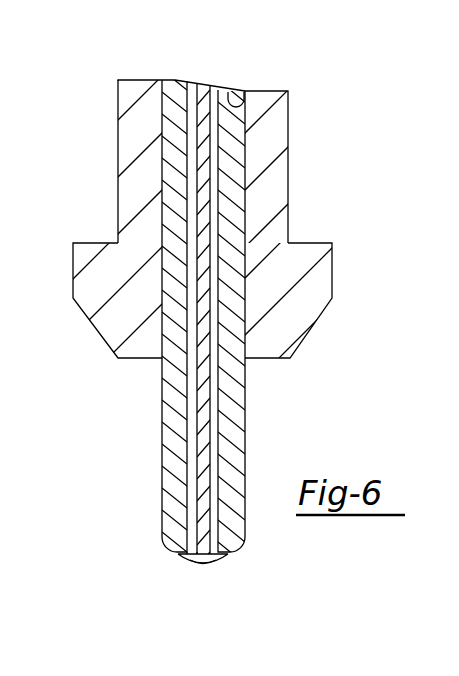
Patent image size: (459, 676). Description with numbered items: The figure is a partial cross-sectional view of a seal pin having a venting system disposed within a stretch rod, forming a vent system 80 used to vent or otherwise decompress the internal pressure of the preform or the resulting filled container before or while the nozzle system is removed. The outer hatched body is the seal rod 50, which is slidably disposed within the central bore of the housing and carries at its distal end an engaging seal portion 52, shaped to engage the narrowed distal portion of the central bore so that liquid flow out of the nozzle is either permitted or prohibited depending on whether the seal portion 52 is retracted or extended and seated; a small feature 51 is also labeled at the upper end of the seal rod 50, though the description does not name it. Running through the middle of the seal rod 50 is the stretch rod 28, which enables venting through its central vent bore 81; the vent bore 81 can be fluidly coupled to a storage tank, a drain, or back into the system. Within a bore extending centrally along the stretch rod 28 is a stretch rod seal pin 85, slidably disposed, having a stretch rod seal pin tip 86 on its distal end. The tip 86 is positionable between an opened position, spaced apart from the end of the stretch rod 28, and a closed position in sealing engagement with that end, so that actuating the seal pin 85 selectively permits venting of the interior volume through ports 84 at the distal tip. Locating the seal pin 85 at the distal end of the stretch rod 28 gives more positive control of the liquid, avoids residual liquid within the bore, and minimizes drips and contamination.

The seal rod 50 is at (118, 103).
The seal pocket 51 is at (234, 93).
The seal portion 52 is at (332, 275).
The vent system 80 is at (325, 188).
The stretch rod 28 is at (160, 412).
The stretch rod seal pin 85 is at (213, 383).
The central vent bore 81 is at (188, 463).
The ports 84 is at (228, 553).
The stretch rod seal pin tip 86 is at (198, 563).